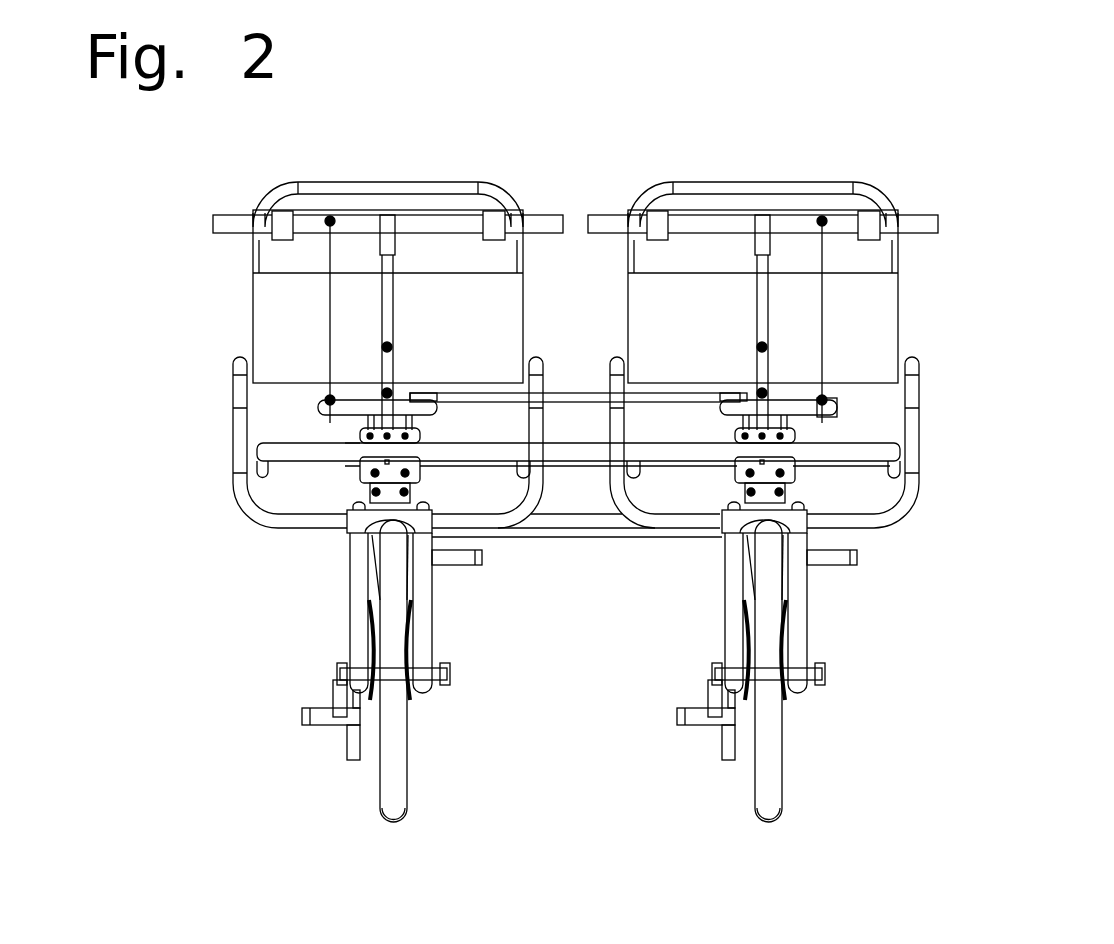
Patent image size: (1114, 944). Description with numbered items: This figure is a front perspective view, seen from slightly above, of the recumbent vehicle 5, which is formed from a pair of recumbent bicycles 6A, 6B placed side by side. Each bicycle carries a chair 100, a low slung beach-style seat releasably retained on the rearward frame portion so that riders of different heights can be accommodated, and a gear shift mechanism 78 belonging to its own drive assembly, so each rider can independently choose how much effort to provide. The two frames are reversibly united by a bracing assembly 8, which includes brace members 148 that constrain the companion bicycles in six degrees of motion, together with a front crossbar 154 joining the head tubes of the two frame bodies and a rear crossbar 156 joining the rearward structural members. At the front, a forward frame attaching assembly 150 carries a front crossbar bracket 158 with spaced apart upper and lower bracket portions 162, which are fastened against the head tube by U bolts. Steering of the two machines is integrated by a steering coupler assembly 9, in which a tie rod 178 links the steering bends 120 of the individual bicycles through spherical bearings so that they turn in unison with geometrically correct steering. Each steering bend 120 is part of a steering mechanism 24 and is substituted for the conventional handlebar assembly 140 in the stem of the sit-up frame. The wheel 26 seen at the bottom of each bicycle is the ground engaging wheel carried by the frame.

The chair 100 is at (388, 306).
The handlebar assembly 140 is at (552, 213).
The gear shift mechanism 78 is at (809, 266).
The tie rod 178 is at (570, 392).
The steering bend 120 is at (357, 405).
The steering coupler assembly 9 is at (855, 388).
The steering mechanism 24 is at (865, 400).
The front crossbar bracket 158 is at (793, 440).
The front crossbar 154 is at (590, 465).
The rear crossbar 156 is at (542, 538).
The brace members 148 is at (640, 537).
The forward frame attaching assembly 150 is at (358, 472).
The upper and lower bracket portions 162 is at (793, 480).
The bracing assembly 8 is at (498, 468).
The recumbent vehicle 5 is at (646, 578).
The recumbent bicycle 6B is at (320, 800).
The recumbent bicycle 6A is at (752, 709).
The wheel 26 is at (755, 808).